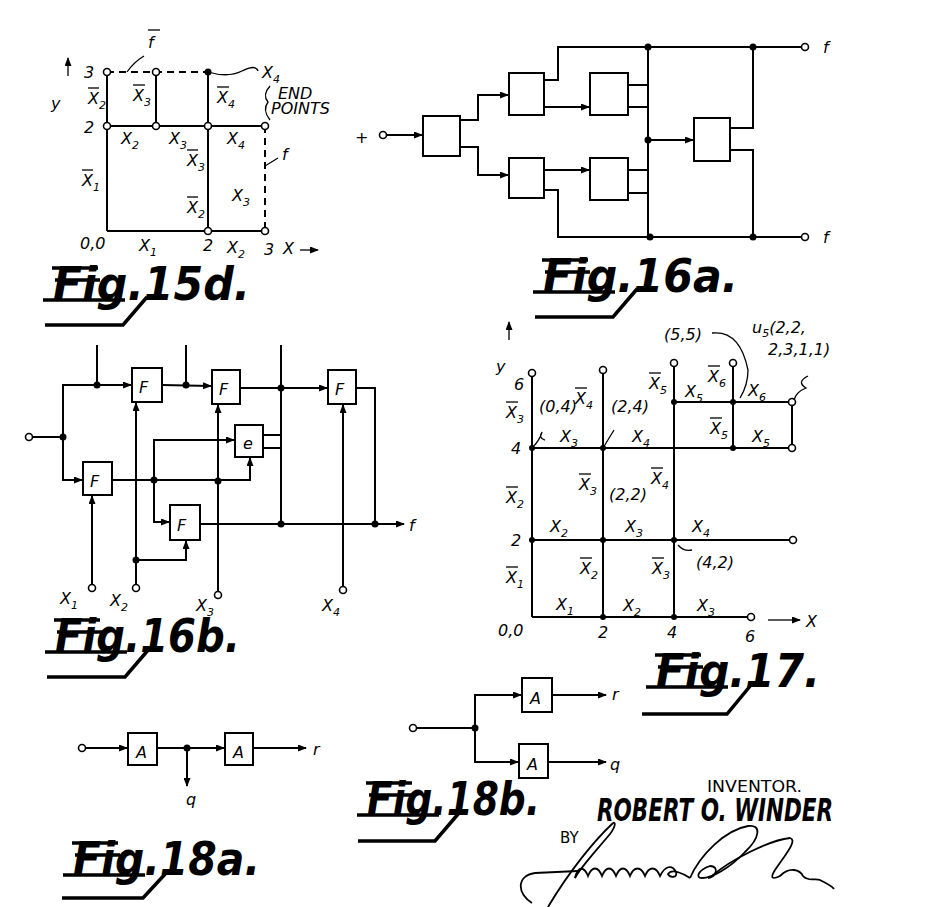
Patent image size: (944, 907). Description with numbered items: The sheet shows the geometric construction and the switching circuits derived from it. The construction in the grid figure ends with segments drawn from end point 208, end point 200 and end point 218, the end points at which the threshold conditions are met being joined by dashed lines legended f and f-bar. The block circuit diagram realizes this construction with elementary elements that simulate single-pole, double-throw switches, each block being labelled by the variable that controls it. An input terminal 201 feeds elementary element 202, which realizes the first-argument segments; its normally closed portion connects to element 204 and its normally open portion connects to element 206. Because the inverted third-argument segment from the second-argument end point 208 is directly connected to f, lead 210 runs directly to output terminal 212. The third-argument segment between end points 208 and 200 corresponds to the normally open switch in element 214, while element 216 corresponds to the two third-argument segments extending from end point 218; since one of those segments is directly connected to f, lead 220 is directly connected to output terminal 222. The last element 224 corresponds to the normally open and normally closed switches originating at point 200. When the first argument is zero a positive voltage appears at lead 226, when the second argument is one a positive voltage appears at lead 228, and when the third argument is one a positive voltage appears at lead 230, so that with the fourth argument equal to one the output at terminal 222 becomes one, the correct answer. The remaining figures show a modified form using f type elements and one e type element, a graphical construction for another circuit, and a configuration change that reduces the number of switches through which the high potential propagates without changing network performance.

In FIG. 15D, the end point 200 is at (204, 124).
In FIG. 15D, the x2 end point 208 is at (157, 178).
In FIG. 15D, the end point 218 is at (211, 177).
In FIG. 16A, the input terminal 201 is at (386, 128).
In FIG. 16A, the elementary element 202 is at (441, 158).
In FIG. 16A, the element 204 is at (517, 72).
In FIG. 16A, the element 206 is at (521, 200).
In FIG. 16A, the lead 210 is at (558, 50).
In FIG. 16A, the output terminal 212 is at (802, 44).
In FIG. 16A, the element 214 is at (617, 74).
In FIG. 16A, the element 216 is at (617, 204).
In FIG. 16A, the lead 220 is at (650, 232).
In FIG. 16A, the output terminal 222 is at (803, 234).
In FIG. 16A, the element 224 is at (716, 117).
In FIG. 16A, the lead 226 is at (466, 113).
In FIG. 16A, the lead 228 is at (565, 110).
In FIG. 16A, the lead 230 is at (650, 120).